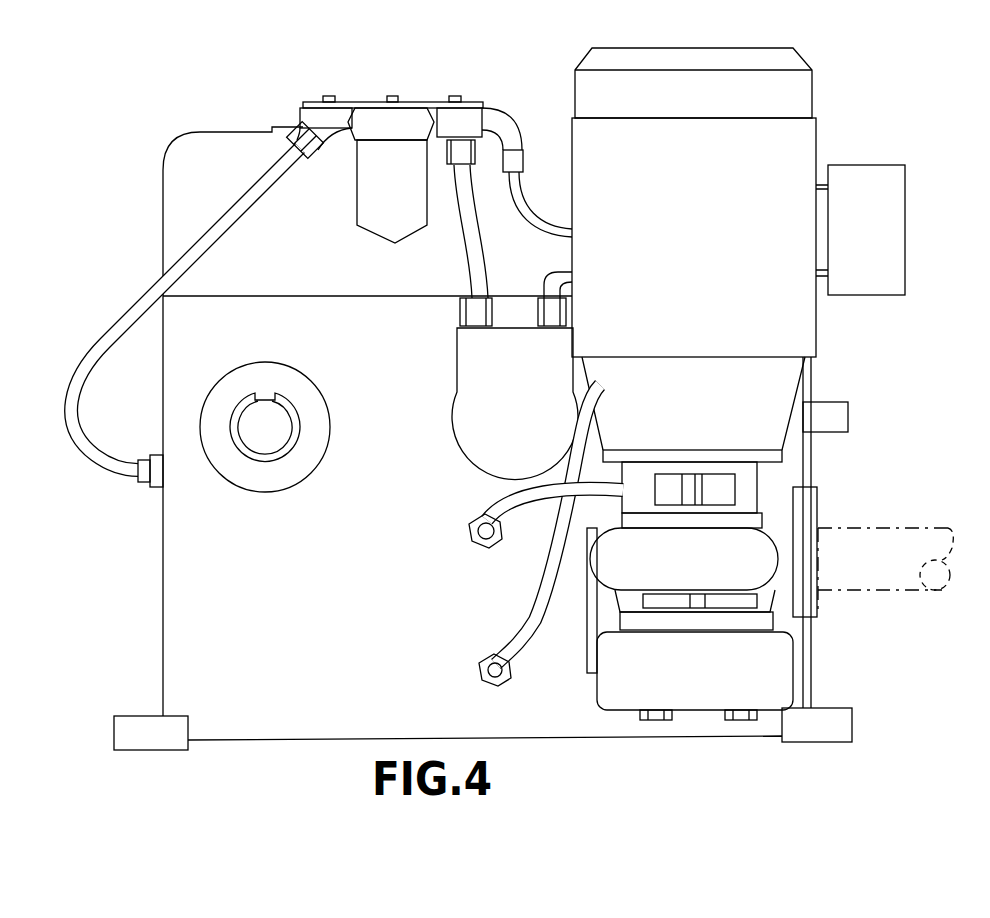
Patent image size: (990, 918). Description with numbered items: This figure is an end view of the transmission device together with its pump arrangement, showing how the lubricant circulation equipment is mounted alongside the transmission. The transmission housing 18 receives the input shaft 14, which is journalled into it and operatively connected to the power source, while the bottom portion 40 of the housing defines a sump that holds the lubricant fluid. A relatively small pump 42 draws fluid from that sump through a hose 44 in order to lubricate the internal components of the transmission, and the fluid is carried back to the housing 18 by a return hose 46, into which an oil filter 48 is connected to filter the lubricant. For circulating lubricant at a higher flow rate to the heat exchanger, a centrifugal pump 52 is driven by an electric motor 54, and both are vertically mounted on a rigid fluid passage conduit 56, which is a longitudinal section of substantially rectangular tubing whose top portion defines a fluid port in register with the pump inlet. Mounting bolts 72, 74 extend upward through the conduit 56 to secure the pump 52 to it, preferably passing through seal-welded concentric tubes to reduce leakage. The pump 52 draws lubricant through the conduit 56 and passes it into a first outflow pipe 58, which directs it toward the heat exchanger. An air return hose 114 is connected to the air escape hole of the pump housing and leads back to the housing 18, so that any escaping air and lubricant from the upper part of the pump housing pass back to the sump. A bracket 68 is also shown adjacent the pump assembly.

The input shaft 14 is at (300, 427).
The transmission housing 18 is at (160, 212).
The bottom portion 40 is at (178, 668).
The pump 42 is at (456, 360).
The hose 44 is at (530, 612).
The return hose 46 is at (92, 350).
The oil filter 48 is at (358, 185).
The centrifugal pump 52 is at (760, 548).
The electric motor 54 is at (747, 48).
The fluid passage conduit 56 is at (778, 680).
The first outflow pipe 58 is at (920, 525).
The mounting bracket 68 is at (585, 625).
The mounting bolt 72 is at (652, 722).
The mounting bolt 74 is at (738, 722).
The air return hose 114 is at (505, 540).